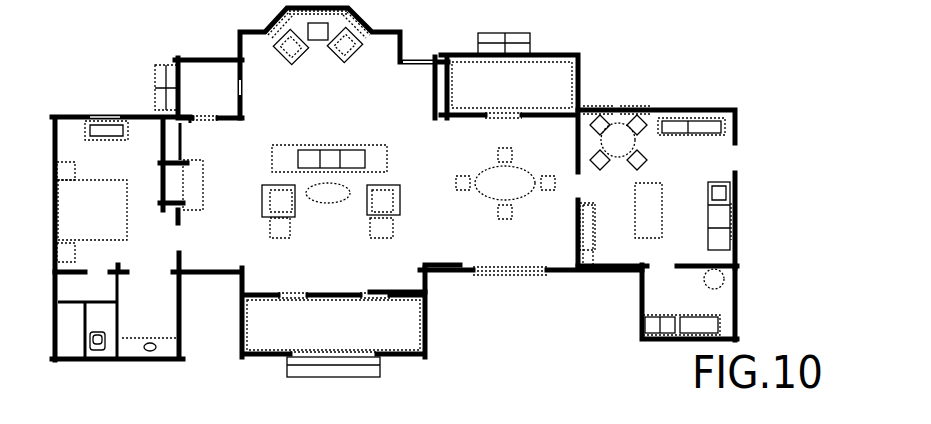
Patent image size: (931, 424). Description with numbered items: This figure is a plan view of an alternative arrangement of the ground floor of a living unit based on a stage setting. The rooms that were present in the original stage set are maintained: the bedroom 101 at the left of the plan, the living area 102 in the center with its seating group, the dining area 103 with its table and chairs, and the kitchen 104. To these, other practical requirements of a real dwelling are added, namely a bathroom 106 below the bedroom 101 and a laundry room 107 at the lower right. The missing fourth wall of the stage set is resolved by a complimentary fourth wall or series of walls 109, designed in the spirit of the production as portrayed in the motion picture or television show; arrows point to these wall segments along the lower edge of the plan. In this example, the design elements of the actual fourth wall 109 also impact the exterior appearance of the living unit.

The bedroom 101 is at (127, 194).
The living area 102 is at (344, 130).
The dining area 103 is at (531, 211).
The kitchen 104 is at (656, 187).
The bathroom 106 is at (117, 306).
The laundry room 107 is at (689, 302).
The fourth wall 109 is at (452, 257).